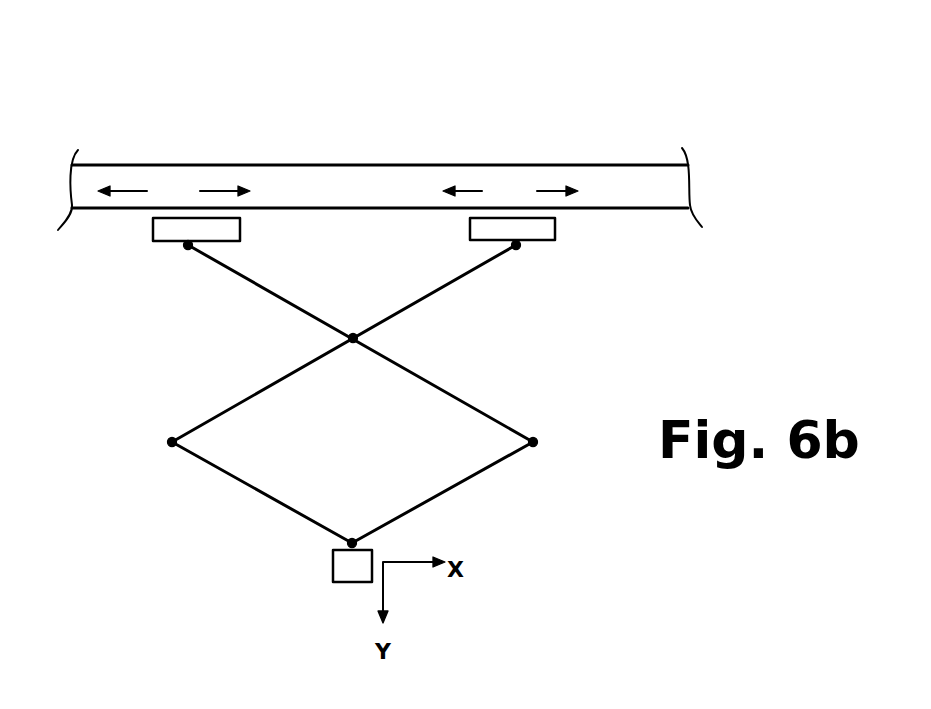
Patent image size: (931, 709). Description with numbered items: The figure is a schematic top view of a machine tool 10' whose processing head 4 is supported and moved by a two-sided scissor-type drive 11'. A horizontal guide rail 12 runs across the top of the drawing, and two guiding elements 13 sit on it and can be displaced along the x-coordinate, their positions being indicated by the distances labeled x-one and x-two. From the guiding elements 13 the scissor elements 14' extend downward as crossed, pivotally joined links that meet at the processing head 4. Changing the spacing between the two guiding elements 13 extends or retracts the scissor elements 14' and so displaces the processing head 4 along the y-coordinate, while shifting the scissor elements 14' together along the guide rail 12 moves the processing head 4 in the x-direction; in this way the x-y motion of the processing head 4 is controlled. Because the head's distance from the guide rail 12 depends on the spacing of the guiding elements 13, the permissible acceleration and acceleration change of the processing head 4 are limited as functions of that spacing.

The machine tool 10' is at (380, 117).
The guide rail 12 is at (622, 178).
The guiding elements 13 is at (172, 233).
The two-sided scissor-type drive 11' is at (297, 403).
The scissor elements 14' is at (241, 503).
The processing head 4 is at (345, 565).